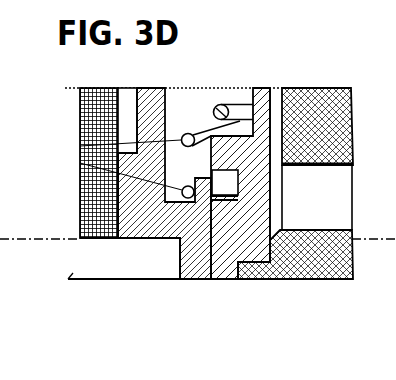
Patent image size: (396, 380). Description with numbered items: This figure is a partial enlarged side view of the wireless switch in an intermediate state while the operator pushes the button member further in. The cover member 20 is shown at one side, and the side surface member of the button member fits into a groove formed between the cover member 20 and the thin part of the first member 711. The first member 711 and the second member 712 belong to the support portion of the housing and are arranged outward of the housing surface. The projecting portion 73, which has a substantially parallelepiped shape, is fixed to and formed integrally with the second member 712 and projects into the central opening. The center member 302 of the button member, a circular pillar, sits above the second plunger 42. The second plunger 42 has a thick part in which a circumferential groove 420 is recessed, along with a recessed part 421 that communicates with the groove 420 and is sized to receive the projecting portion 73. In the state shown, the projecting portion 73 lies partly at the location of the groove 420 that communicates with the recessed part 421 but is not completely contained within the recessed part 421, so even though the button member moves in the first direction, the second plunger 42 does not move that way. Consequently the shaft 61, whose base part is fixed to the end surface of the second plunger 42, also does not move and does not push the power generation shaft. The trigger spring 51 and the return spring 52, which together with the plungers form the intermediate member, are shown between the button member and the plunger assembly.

The cover member 20 is at (100, 88).
The trigger spring 51 is at (215, 105).
The return spring 52 is at (80, 163).
The second plunger 42 is at (257, 88).
The center member 302 is at (316, 98).
The recessed part 421 is at (246, 180).
The groove 420 is at (246, 215).
The first member 711 is at (135, 114).
The second member 712 is at (80, 217).
The projecting portion 73 is at (133, 241).
The shaft 61 is at (320, 281).